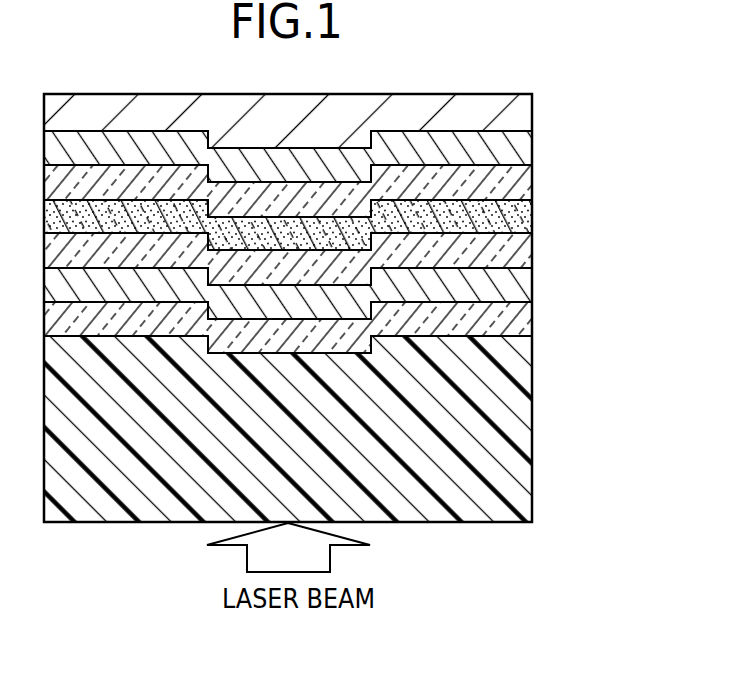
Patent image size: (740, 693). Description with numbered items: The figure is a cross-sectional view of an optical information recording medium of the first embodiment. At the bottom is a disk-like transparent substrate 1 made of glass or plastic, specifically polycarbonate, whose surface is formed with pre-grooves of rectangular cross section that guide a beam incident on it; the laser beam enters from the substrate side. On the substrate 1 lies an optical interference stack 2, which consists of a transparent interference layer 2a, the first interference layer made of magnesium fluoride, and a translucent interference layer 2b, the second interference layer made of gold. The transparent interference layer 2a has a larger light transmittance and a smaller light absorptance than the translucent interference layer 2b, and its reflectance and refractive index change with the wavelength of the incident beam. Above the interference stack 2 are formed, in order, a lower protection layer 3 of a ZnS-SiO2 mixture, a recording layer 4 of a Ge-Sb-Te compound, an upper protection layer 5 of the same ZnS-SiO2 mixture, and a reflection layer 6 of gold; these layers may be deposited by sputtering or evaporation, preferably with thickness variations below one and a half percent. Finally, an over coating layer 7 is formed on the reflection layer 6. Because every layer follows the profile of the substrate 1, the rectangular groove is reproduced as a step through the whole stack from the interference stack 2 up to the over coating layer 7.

The transparent substrate 1 is at (523, 437).
The optical interference stack 2 is at (355, 310).
The transparent interference layer 2a is at (532, 323).
The translucent interference layer 2b is at (532, 290).
The lower protection layer 3 is at (532, 257).
The recording layer 4 is at (532, 222).
The upper protection layer 5 is at (532, 188).
The reflection layer 6 is at (532, 153).
The over coating layer 7 is at (532, 115).